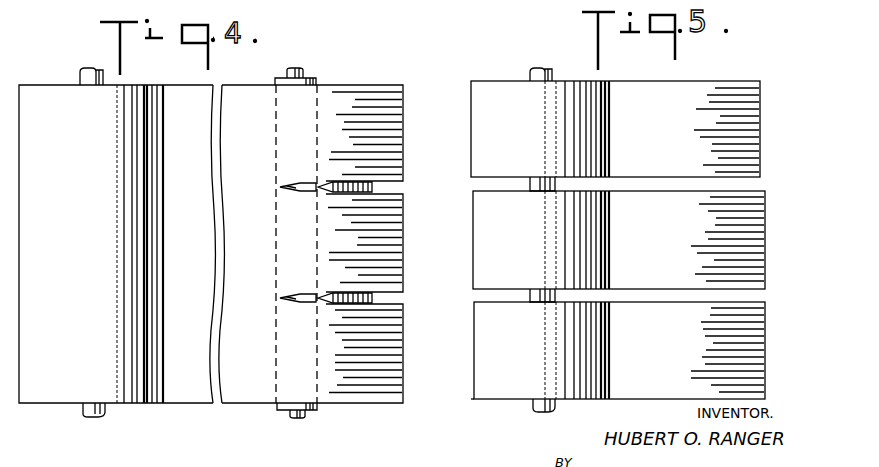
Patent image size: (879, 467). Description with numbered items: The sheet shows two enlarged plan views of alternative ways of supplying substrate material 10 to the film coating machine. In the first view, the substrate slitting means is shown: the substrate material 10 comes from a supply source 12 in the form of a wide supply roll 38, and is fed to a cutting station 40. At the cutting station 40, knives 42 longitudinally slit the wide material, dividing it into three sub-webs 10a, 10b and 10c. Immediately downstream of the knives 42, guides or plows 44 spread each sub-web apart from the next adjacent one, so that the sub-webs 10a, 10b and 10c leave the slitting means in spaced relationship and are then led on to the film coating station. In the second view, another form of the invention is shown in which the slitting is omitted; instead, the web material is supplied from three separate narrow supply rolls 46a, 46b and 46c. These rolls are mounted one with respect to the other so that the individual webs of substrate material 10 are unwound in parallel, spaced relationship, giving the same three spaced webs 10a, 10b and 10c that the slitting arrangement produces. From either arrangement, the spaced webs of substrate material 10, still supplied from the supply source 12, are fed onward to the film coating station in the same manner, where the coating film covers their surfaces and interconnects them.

In FIG. 4, the substrate material 10 is at (193, 98).
In FIG. 4, the sub-web 10a is at (366, 108).
In FIG. 5, the sub-web 10a is at (742, 147).
In FIG. 4, the sub-web 10b is at (383, 231).
In FIG. 5, the sub-web 10b is at (750, 253).
In FIG. 4, the sub-web 10c is at (386, 352).
In FIG. 5, the sub-web 10c is at (750, 362).
In FIG. 4, the supply source 12 is at (216, 418).
In FIG. 5, the supply source 12 is at (538, 416).
In FIG. 4, the wide supply roll 38 is at (63, 386).
In FIG. 4, the cutting station 40 is at (282, 416).
In FIG. 4, the knives 42 is at (292, 188).
In FIG. 4, the guides or plows 44 is at (357, 182).
In FIG. 5, the narrow supply roll 46a is at (488, 97).
In FIG. 5, the narrow supply roll 46b is at (483, 203).
In FIG. 5, the narrow supply roll 46c is at (483, 380).